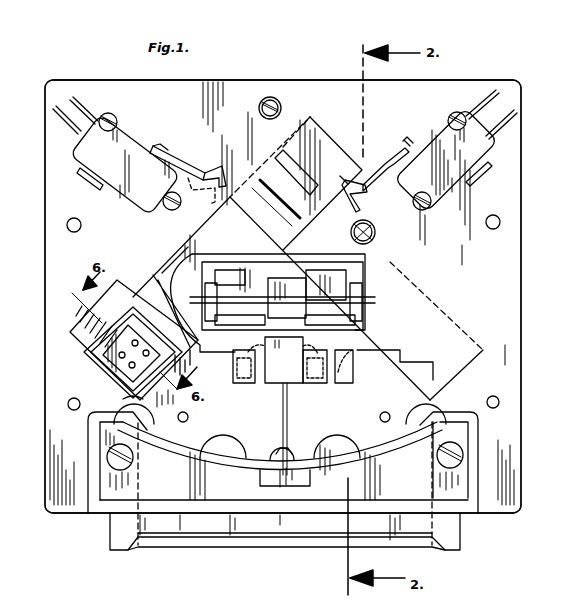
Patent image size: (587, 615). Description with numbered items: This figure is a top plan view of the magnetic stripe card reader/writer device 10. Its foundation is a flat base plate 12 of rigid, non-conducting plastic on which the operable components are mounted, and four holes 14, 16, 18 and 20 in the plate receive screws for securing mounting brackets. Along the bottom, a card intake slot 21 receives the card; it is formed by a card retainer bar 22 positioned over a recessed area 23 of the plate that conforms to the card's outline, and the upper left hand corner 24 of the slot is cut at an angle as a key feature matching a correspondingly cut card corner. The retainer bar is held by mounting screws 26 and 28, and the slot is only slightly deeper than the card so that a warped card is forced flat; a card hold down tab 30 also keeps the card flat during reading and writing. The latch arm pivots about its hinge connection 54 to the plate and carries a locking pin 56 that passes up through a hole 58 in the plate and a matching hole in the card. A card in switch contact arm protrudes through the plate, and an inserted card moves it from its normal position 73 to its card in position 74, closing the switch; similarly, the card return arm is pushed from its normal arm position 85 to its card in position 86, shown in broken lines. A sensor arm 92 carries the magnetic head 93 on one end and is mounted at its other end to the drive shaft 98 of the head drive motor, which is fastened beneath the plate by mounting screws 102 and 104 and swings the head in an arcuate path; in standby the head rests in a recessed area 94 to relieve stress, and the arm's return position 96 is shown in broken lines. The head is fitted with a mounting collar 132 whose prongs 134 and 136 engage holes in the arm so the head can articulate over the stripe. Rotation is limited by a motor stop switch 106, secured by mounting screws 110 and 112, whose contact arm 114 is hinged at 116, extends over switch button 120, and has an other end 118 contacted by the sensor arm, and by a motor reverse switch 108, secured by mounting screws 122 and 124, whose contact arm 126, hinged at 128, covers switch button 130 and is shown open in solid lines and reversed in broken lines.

The card reader/writer device 10 is at (524, 292).
The base plate 12 is at (512, 258).
The hole 14 is at (493, 215).
The hole 16 is at (500, 402).
The hole 18 is at (74, 410).
The hole 20 is at (67, 225).
The card intake slot 21 is at (222, 550).
The card retainer bar 22 is at (150, 493).
The recessed area 23 is at (280, 445).
The upper left hand corner of the card intake slot 24 is at (191, 411).
The mounting screw 26 is at (131, 459).
The mounting screw 28 is at (440, 455).
The card hold down tab 30 is at (288, 378).
The hinge connection 54 is at (210, 300).
The locking pin 56 is at (275, 449).
The hole 58 is at (285, 450).
The normal position 73 is at (345, 384).
The card in position 74 is at (353, 350).
The normal arm position 85 is at (250, 384).
The card in position 86 is at (283, 346).
The sensor arm 92 is at (210, 228).
The magnetic head 93 is at (115, 372).
The recessed area 94 is at (92, 322).
The return position 96 is at (470, 332).
The drive shaft 98 is at (288, 188).
The mounting screw 102 is at (283, 101).
The mounting screw 104 is at (375, 238).
The motor stop switch 106 is at (436, 130).
The motor reverse switch 108 is at (130, 140).
The mounting screw 110 is at (464, 100).
The mounting screw 112 is at (428, 210).
The contact arm 114 is at (361, 193).
The hinge point 116 is at (411, 137).
The other end of contact arm 118 is at (345, 185).
The switch button 120 is at (400, 152).
The mounting screw 122 is at (170, 210).
The mounting screw 124 is at (108, 113).
The contact arm 126 is at (208, 170).
The hinge point 128 is at (152, 148).
The switch button 130 is at (170, 163).
The mounting collar 132 is at (108, 355).
The prong 134 is at (130, 401).
The prong 136 is at (95, 342).